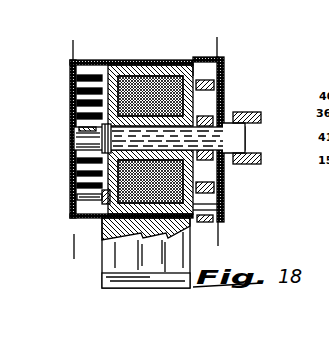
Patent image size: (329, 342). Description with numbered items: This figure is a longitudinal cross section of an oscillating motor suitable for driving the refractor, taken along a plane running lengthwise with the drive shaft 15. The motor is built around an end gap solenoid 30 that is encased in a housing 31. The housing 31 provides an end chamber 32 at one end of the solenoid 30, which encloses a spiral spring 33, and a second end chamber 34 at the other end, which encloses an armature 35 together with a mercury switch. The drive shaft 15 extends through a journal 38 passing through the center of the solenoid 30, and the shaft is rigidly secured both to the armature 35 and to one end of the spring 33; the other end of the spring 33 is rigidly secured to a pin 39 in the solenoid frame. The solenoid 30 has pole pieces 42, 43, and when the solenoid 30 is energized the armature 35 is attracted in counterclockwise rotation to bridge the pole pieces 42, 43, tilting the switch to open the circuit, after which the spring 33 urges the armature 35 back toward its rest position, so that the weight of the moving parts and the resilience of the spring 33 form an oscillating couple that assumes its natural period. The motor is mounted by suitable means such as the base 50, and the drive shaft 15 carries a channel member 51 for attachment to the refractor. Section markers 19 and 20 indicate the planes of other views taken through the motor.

The drive shaft 15 is at (243, 134).
The section line 19- 19 is at (219, 37).
The section line 20- 20 is at (72, 40).
The end gap solenoid 30 is at (168, 61).
The housing 31 is at (113, 60).
The end chamber 32 is at (90, 72).
The spiral spring 33 is at (77, 106).
The end chamber 34 is at (213, 173).
The armature 35 is at (225, 67).
The journal 38 is at (140, 61).
The pin 39 is at (73, 201).
The solenoid pole piece 42 is at (205, 48).
The solenoid pole piece 43 is at (210, 207).
The base 50 is at (128, 262).
The channel member 51 is at (258, 112).